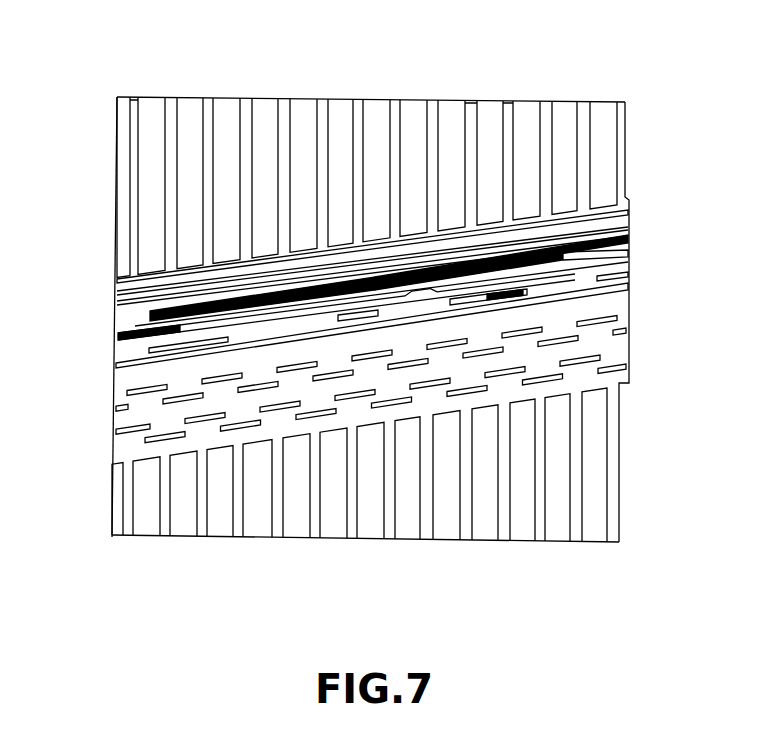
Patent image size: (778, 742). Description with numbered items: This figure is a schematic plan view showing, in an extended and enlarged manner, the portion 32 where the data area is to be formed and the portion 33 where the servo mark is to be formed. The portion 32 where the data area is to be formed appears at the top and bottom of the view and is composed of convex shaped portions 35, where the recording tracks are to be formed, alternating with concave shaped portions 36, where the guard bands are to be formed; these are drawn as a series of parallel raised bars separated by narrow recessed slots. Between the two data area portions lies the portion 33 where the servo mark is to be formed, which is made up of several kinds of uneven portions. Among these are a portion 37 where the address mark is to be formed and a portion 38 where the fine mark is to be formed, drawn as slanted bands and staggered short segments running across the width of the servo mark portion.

The portion where the data area is to be formed 32 is at (626, 146).
The portion where the servo mark is to be formed 33 is at (640, 197).
The convex shaped portions 35 is at (377, 113).
The concave shaped portions 36 is at (473, 113).
The portion where address mark is to be formed 37 is at (117, 313).
The portion where fine mark is to be formed 38 is at (117, 420).